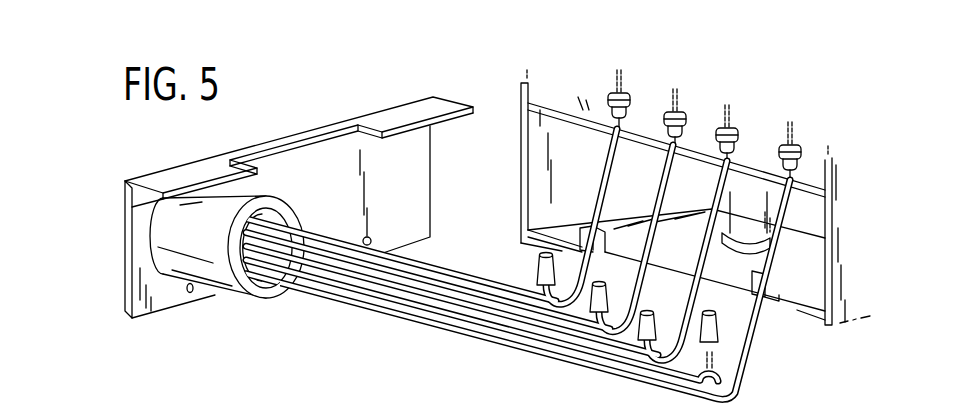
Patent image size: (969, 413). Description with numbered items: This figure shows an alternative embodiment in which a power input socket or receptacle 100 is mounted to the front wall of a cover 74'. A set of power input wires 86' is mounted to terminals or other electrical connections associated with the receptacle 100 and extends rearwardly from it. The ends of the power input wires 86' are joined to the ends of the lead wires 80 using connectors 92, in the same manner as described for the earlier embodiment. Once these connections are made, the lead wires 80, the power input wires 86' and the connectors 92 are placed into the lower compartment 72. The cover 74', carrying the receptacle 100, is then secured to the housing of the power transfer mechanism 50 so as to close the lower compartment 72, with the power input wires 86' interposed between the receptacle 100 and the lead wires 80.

The power transfer mechanism 50 is at (518, 58).
The lower compartment 72 is at (815, 213).
The cover 74' is at (274, 231).
The lead wires 80 is at (613, 153).
The power input wires 86' is at (518, 267).
The connectors 92 is at (536, 266).
The power input receptacle 100 is at (180, 290).